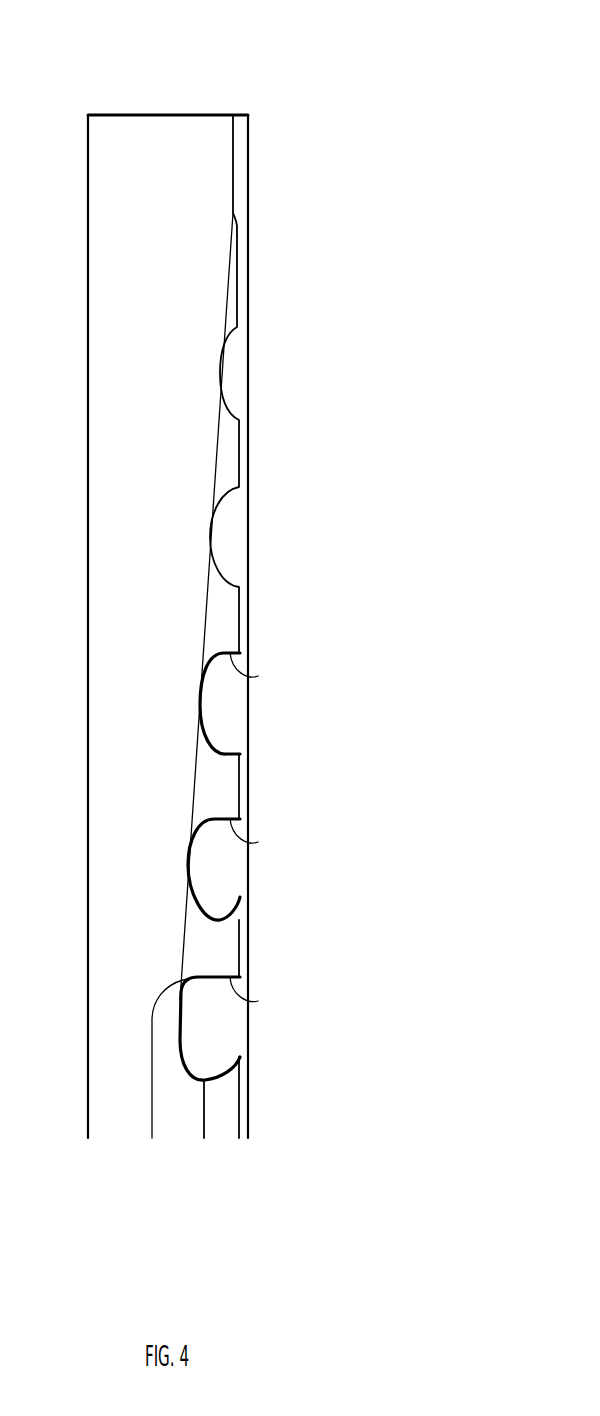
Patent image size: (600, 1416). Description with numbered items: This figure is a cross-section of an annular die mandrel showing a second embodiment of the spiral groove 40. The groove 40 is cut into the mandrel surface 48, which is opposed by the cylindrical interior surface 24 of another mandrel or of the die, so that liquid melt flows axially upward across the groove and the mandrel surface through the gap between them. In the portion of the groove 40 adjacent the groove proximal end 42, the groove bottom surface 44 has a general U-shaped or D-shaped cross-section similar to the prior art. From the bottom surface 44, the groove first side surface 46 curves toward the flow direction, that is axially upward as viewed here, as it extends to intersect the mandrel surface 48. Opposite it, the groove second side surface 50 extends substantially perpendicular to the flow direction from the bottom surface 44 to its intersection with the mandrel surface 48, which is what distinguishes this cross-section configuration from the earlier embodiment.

The cylindrical interior surface 24 is at (244, 208).
The spiral groove 40 is at (240, 697).
The groove proximal end 42 is at (257, 1047).
The groove bottom surface 44 is at (197, 725).
The groove first side surface 46 is at (236, 733).
The mandrel surface 48 is at (236, 213).
The groove second side surface 50 is at (230, 653).